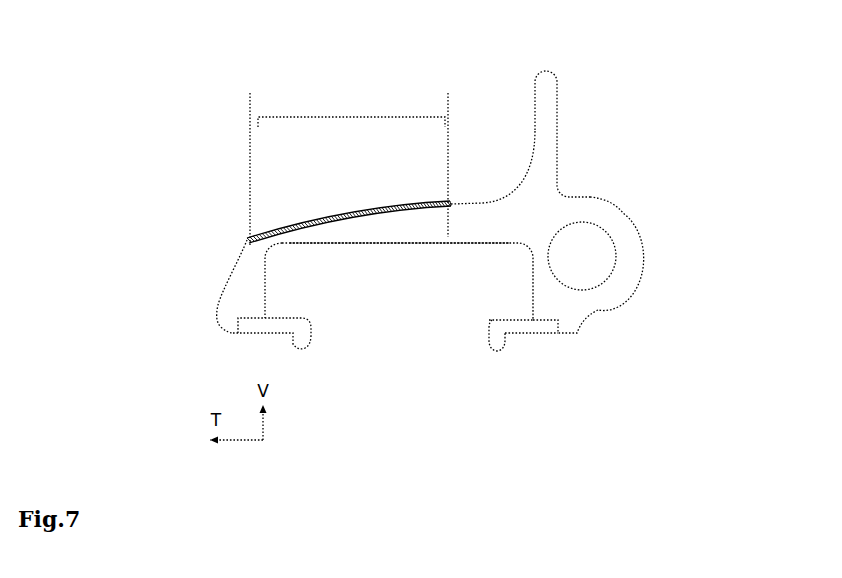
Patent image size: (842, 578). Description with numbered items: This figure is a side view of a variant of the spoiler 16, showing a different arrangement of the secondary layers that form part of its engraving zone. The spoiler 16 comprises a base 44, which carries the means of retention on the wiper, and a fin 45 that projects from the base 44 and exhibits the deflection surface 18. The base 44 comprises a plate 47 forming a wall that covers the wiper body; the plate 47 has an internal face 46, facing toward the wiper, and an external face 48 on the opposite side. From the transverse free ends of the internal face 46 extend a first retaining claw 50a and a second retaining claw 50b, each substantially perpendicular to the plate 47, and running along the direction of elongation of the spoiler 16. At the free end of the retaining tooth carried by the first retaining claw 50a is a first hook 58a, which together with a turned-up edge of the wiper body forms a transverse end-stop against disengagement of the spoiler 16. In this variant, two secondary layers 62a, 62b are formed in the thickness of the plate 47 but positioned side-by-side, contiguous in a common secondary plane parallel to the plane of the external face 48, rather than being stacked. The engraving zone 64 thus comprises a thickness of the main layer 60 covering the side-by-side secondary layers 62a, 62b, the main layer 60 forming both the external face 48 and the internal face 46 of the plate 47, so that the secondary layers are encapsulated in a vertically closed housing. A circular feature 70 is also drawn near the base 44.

The spoiler 16 is at (163, 210).
The deflection surface 18 is at (532, 130).
The base 44 is at (644, 282).
The fin 45 is at (557, 103).
The internal face 46 is at (359, 249).
The plate 47 is at (484, 202).
The external face 48 is at (246, 239).
The first retaining claw 50a is at (602, 303).
The second retaining claw 50b is at (245, 288).
The first hook 58a is at (498, 340).
The main layer 60 is at (363, 207).
The secondary layer 62a is at (332, 217).
The secondary layer 62b is at (412, 202).
The engraving zone 64 is at (350, 116).
The hollow chamber 70 is at (587, 247).